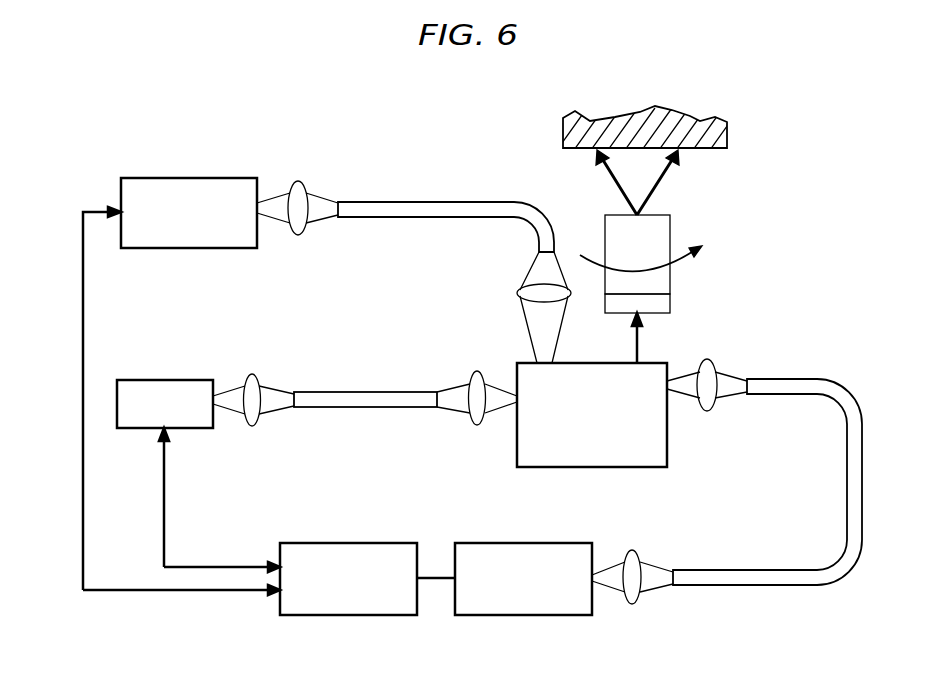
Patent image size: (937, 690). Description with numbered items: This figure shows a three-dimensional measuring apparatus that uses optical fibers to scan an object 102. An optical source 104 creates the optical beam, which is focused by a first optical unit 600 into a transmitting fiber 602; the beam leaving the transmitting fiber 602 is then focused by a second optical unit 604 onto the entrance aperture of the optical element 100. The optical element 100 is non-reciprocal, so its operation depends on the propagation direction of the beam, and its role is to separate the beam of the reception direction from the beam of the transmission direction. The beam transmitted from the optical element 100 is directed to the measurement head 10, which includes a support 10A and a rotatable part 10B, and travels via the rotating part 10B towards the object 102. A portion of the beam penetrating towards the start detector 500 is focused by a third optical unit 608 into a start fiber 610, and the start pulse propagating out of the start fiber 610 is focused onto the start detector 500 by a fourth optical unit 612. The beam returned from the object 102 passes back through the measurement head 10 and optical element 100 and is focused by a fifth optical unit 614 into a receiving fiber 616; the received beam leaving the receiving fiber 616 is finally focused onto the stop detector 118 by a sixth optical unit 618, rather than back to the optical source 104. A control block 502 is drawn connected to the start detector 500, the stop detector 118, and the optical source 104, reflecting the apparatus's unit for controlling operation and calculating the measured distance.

The measurement head 10 is at (776, 240).
The support 10A is at (670, 305).
The rotatable part 10B is at (607, 215).
The optical element 100 is at (578, 427).
The object 102 is at (710, 150).
The optical source 104 is at (168, 380).
The stop detector 118 is at (175, 178).
The start detector 500 is at (522, 543).
The control 502 is at (352, 543).
The first optical unit 600 is at (252, 374).
The transmitting fiber 602 is at (375, 392).
The second optical unit 604 is at (473, 424).
The third optical unit 608 is at (708, 359).
The start fiber 610 is at (805, 379).
The fourth optical unit 612 is at (638, 550).
The fifth optical unit 614 is at (518, 293).
The receiving fiber 616 is at (427, 202).
The sixth optical unit 618 is at (299, 181).